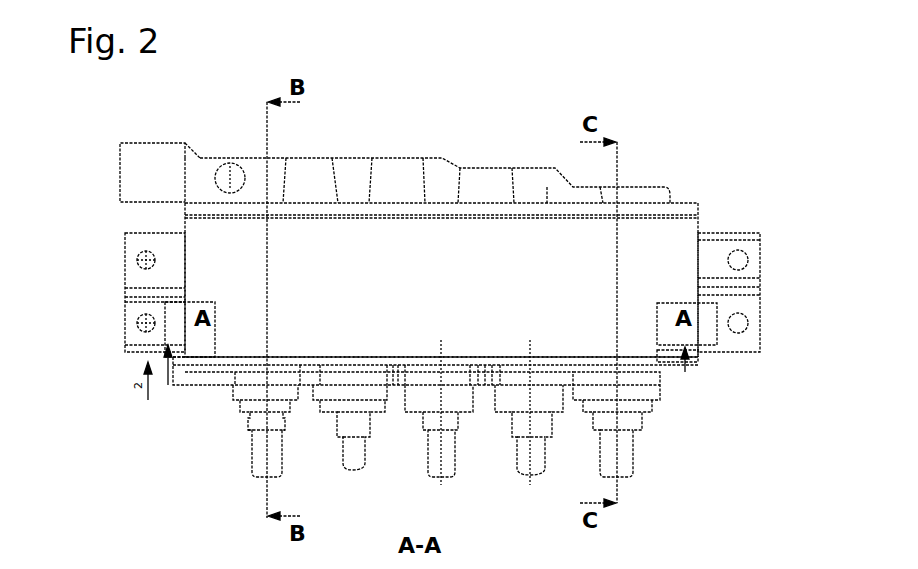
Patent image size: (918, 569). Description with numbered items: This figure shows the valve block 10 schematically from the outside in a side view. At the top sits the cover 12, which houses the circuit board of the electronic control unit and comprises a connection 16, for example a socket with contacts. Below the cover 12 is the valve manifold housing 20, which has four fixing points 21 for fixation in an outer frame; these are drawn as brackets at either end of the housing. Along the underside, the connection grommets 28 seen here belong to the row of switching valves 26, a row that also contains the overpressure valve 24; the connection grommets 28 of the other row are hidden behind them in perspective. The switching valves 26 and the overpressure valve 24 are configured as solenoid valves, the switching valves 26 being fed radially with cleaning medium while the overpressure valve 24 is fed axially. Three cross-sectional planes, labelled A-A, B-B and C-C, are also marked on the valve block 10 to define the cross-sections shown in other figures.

The valve block 10 is at (706, 93).
The cover 12 is at (640, 180).
The connection 16 is at (118, 167).
The valve manifold housing 20 is at (228, 342).
The fixing points 21 is at (127, 318).
The overpressure valve 24 is at (255, 372).
The switching valves 26 is at (343, 372).
The connection grommets 28 is at (258, 455).